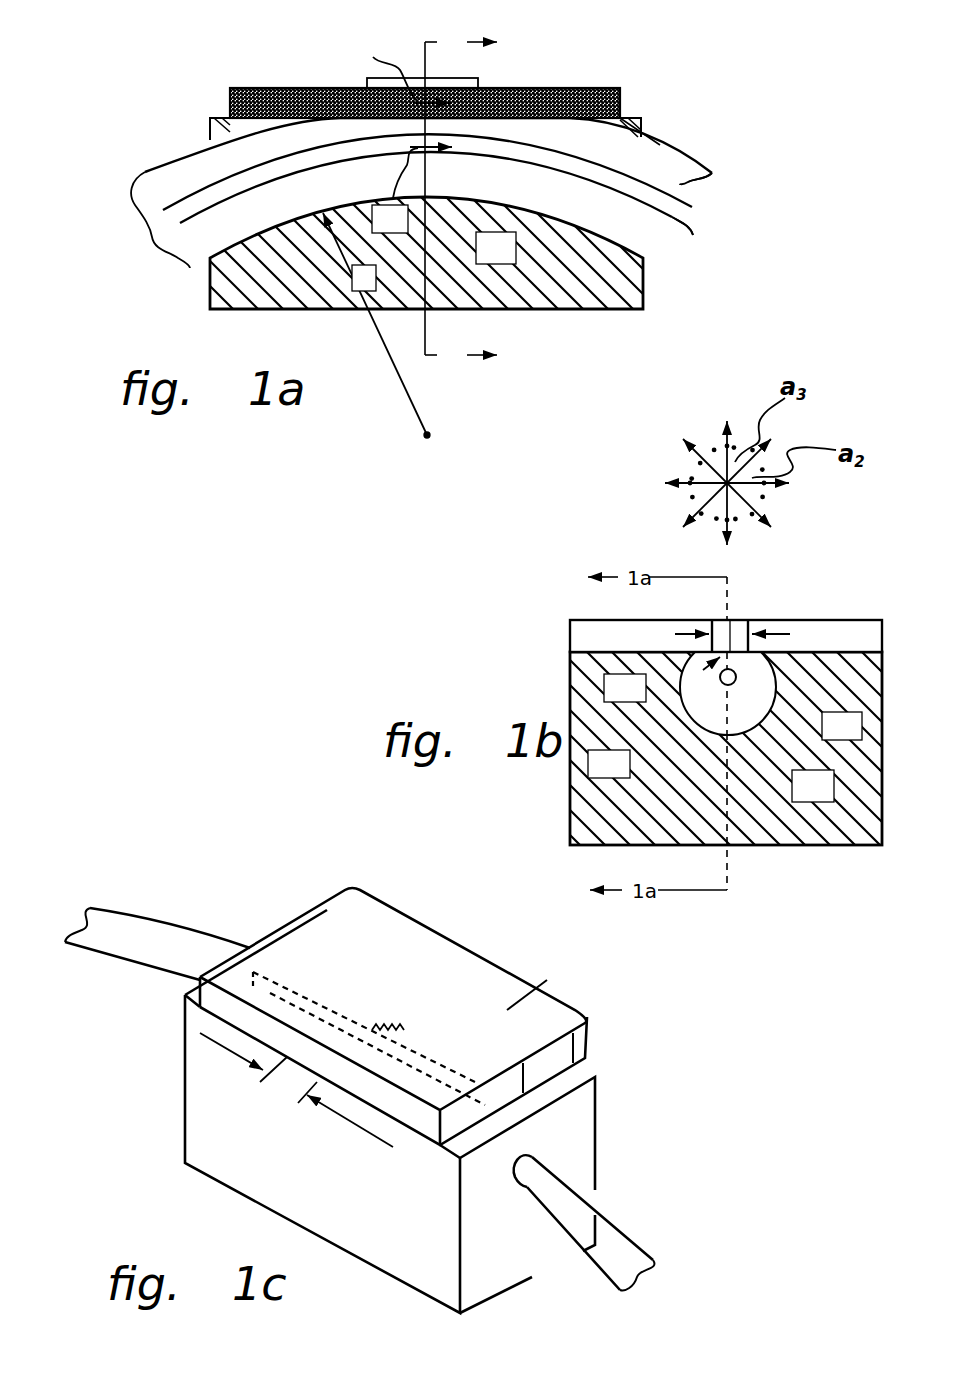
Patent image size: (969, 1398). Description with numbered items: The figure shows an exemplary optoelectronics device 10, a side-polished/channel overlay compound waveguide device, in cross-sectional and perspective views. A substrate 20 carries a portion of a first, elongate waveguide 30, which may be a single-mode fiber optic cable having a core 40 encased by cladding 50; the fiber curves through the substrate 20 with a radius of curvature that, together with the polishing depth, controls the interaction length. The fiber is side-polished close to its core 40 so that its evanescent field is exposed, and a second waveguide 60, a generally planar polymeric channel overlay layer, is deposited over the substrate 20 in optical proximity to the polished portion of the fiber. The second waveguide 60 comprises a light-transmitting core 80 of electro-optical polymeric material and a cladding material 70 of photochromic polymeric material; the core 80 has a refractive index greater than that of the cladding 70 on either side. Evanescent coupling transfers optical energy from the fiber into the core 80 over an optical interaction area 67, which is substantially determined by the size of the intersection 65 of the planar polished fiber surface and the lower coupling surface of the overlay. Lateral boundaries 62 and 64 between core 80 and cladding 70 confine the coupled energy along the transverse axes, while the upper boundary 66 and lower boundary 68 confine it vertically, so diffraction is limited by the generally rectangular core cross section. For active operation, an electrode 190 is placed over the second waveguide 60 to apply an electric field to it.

In FIG. 1A, the optoelectronics device 10 is at (707, 90).
In FIG. 1A, the substrate 20 is at (513, 260).
In FIG. 1B, the substrate 20 is at (830, 799).
In FIG. 1C, the substrate 20 is at (356, 1189).
In FIG. 1A, the first waveguide 30 is at (150, 230).
In FIG. 1B, the first waveguide 30 is at (690, 718).
In FIG. 1C, the first waveguide 30 is at (160, 930).
In FIG. 1A, the core 40 is at (693, 235).
In FIG. 1B, the core 40 is at (778, 690).
In FIG. 1A, the cladding 50 is at (682, 183).
In FIG. 1B, the cladding 50 is at (745, 722).
In FIG. 1A, the second waveguide 60 is at (620, 88).
In FIG. 1B, the second waveguide 60 is at (566, 620).
In FIG. 1C, the second waveguide 60 is at (467, 942).
In FIG. 1B, the boundary 62 is at (676, 633).
In FIG. 1B, the boundary 64 is at (790, 633).
In FIG. 1A, the intersection 65 is at (297, 122).
In FIG. 1C, the intersection 65 is at (303, 980).
In FIG. 1B, the upper boundary 66 is at (713, 619).
In FIG. 1C, the optical interaction area 67 is at (380, 1027).
In FIG. 1B, the lower boundary 68 is at (703, 670).
In FIG. 1B, the cladding material 70 is at (874, 619).
In FIG. 1C, the cladding material 70 is at (533, 983).
In FIG. 1B, the light-transmitting core 80 is at (730, 619).
In FIG. 1C, the light-transmitting core 80 is at (510, 1043).
In FIG. 1A, the electrode 190 is at (478, 82).